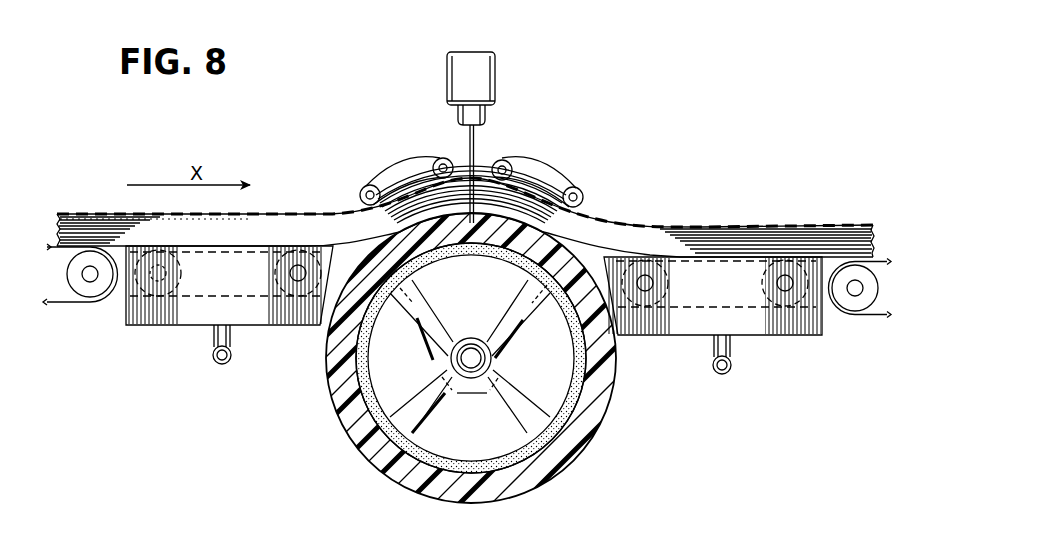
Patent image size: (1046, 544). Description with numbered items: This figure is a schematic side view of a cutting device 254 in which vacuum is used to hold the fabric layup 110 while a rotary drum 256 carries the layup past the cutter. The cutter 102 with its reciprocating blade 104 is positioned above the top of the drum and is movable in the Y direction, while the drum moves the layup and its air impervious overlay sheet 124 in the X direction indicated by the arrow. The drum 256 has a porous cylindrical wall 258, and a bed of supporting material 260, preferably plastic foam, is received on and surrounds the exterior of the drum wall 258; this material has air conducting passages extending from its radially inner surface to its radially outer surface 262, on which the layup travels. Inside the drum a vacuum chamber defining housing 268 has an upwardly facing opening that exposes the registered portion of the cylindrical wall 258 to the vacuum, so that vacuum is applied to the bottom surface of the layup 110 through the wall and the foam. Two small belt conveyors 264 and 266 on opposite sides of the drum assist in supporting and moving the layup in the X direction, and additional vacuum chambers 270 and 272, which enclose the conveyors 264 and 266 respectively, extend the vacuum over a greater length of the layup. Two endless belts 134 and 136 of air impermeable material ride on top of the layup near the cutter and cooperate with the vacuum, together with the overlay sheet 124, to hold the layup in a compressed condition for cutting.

The cutter 102 is at (479, 68).
The reciprocating blade 104 is at (478, 157).
The fabric layup 110 is at (762, 243).
The sheet of air impermeable material 124 is at (653, 223).
The endless belt of air impermeable material 134 is at (411, 167).
The endless belt of air impermeable material 136 is at (526, 170).
The cutting device 254 is at (529, 85).
The rotary drum 256 is at (471, 355).
The porous cylindrical wall 258 is at (533, 455).
The bed of supporting material 260 is at (612, 376).
The radially outer surface 262 is at (580, 462).
The small belt conveyor 264 is at (192, 302).
The small belt conveyor 266 is at (745, 305).
The vacuum chamber defining housing 268 is at (448, 355).
The additional vacuum chamber 270 is at (135, 326).
The additional vacuum chamber 272 is at (795, 338).